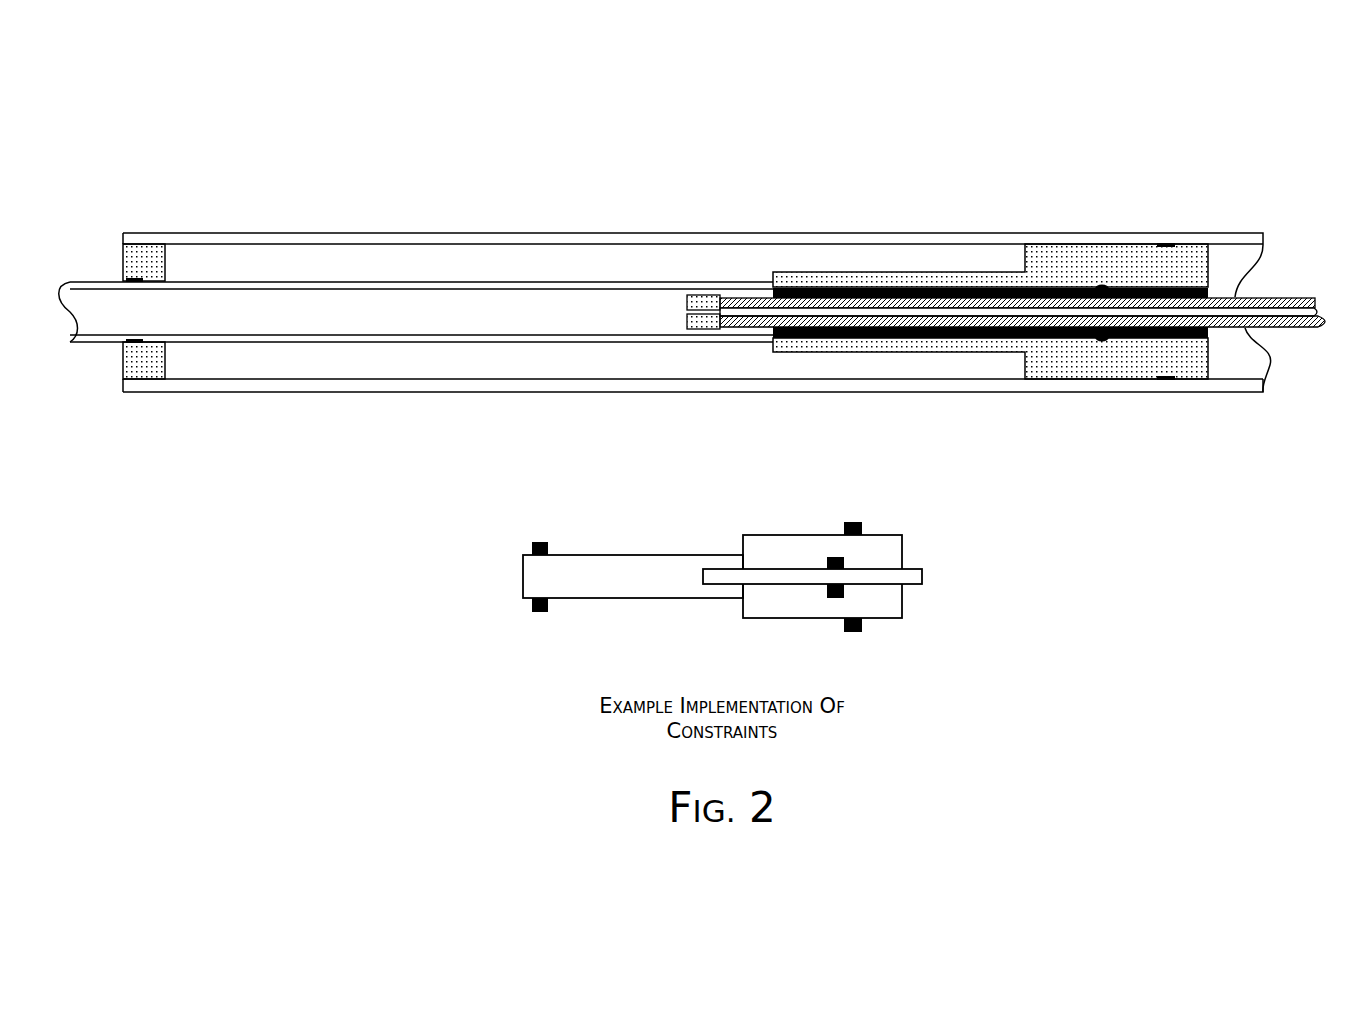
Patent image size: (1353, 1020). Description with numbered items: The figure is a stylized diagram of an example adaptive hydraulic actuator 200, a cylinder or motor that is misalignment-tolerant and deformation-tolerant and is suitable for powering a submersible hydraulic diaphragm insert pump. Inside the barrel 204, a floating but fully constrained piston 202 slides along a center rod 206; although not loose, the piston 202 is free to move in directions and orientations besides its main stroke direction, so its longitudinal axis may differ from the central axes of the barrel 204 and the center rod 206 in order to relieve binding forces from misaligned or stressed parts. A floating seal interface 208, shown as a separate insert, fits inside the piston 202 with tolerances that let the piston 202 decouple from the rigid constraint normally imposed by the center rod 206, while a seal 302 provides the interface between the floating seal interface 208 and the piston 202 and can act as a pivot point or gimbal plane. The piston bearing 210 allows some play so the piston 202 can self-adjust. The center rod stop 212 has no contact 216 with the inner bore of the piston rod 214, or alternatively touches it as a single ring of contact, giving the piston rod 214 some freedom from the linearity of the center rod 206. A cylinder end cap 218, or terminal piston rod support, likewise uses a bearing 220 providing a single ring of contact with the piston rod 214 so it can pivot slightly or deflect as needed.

The hydraulic actuator 200 is at (722, 115).
The piston 202 is at (1118, 350).
The barrel 204 is at (455, 232).
The center rod 206 is at (1265, 329).
The floating seal interface 208 is at (1210, 331).
The piston bearing 210 is at (1168, 243).
The center rod stop 212 is at (705, 322).
The piston rod 214 is at (515, 312).
The contact 216 is at (708, 292).
The cylinder end cap 218 is at (148, 363).
The bearing 220 is at (142, 278).
The seal 302 is at (1106, 284).